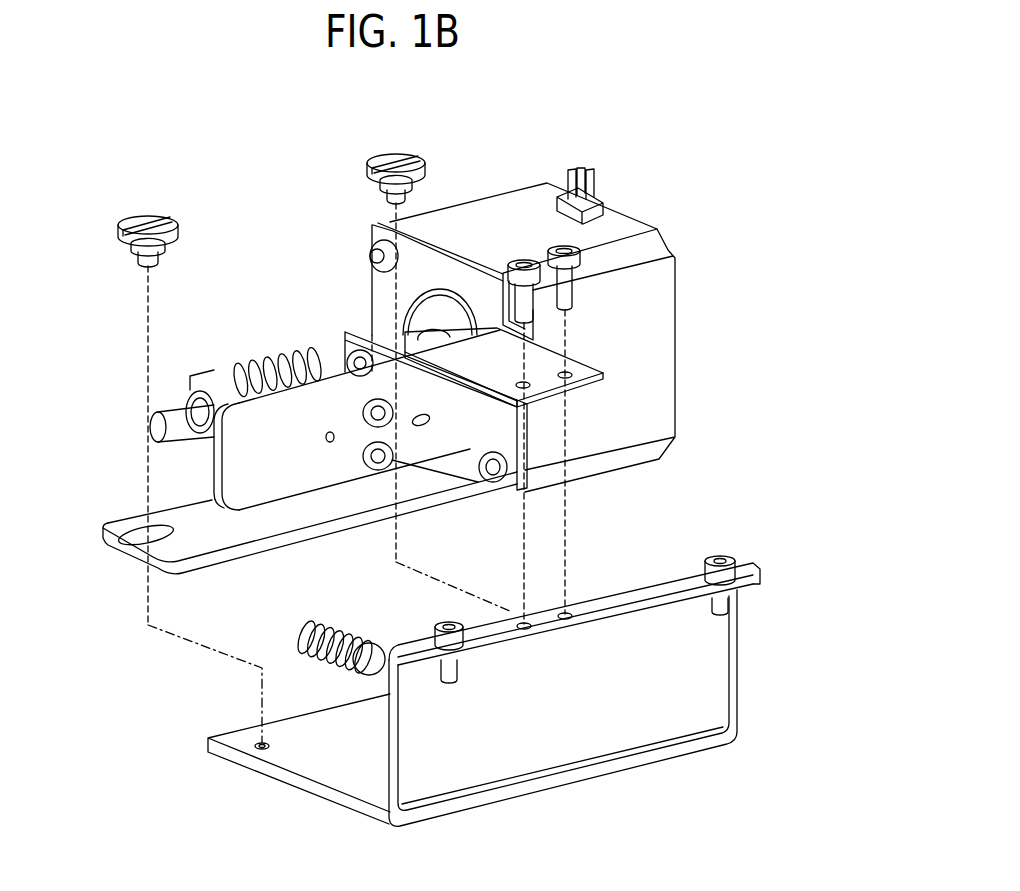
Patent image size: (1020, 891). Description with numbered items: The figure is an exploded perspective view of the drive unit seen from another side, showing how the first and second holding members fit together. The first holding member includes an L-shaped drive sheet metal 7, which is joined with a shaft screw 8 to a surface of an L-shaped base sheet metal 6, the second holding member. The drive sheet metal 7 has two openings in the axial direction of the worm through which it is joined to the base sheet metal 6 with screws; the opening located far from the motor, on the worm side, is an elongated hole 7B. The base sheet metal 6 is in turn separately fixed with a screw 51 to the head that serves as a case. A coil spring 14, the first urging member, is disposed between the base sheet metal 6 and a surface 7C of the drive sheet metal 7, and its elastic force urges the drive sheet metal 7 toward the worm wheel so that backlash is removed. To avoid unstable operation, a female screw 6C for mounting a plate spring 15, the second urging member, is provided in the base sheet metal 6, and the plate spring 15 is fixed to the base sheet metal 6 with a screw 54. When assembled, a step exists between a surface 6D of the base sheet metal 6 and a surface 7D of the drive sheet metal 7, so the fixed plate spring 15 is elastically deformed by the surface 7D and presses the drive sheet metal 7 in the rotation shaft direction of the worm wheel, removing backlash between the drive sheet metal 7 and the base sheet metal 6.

The shaft screw 8 is at (140, 212).
The L-shaped drive sheet metal 7 is at (192, 549).
The elongated hole 7B is at (146, 542).
The surface of the drive sheet metal 7C is at (247, 490).
The surface of the drive sheet metal 7D is at (337, 363).
The plate spring 15 is at (603, 373).
The screw 54 is at (573, 268).
The L-shaped base sheet metal 6 is at (603, 732).
The surface of the base sheet metal 6D is at (657, 597).
The female screw 6C is at (530, 626).
The screw 51 is at (738, 566).
The spring 14 is at (323, 668).